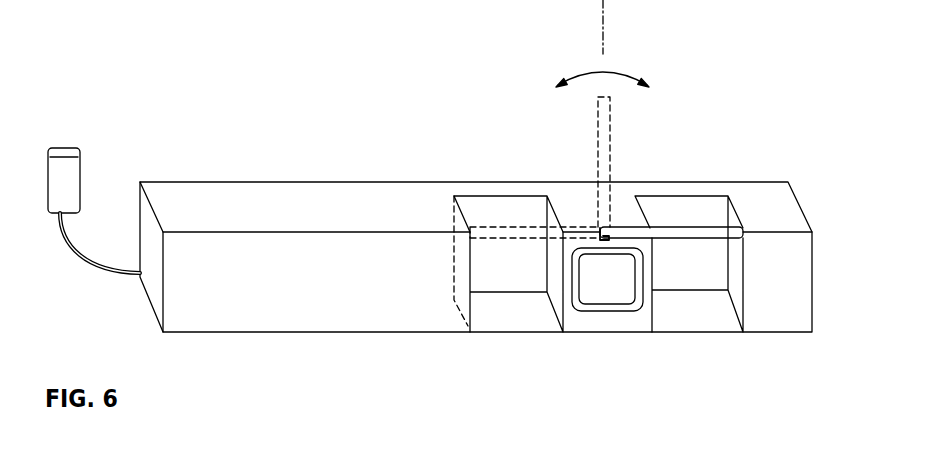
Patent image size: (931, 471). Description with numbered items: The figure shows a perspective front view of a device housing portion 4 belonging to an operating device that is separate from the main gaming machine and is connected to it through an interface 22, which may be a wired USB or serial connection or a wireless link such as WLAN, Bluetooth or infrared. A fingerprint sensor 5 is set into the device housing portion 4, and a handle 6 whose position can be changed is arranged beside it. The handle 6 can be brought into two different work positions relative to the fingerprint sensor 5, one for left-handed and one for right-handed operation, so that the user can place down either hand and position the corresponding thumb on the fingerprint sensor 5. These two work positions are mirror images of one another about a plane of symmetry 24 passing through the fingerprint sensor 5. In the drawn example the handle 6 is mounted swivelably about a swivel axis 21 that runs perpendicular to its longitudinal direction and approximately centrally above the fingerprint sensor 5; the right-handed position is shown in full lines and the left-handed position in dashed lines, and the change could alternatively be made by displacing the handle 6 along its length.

The device housing portion 4 is at (253, 187).
The fingerprint sensor 5 is at (605, 288).
The handle 6 is at (705, 232).
The swivel axis 21 is at (604, 233).
The interface 22 is at (73, 165).
The plane of symmetry 24 is at (602, 32).